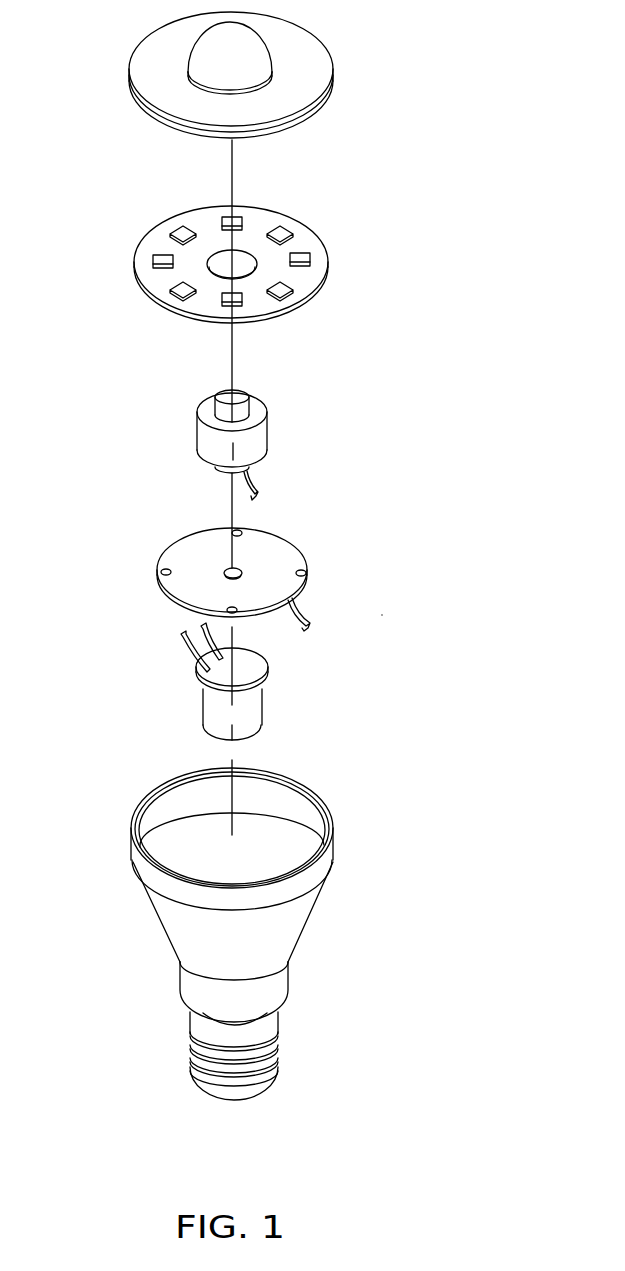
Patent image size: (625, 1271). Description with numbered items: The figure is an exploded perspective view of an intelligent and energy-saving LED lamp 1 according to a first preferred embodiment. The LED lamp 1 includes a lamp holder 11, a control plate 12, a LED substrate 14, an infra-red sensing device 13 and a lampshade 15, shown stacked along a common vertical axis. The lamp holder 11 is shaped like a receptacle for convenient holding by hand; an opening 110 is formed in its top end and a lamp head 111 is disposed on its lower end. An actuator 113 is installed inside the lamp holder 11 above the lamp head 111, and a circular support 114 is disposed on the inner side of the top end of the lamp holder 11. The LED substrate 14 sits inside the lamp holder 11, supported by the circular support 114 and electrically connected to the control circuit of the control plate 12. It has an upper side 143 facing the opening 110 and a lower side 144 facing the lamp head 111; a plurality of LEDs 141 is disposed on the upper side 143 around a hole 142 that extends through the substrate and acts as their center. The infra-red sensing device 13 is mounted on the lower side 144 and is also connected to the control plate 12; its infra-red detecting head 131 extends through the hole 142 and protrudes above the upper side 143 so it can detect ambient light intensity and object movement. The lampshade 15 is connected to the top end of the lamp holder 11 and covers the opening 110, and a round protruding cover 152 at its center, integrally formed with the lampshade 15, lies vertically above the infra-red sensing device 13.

The LED lamp 1 is at (382, 615).
The lamp holder 11 is at (280, 930).
The opening 110 is at (145, 808).
The lamp head 111 is at (252, 1078).
The actuator 113 is at (263, 703).
The circular support 114 is at (317, 815).
The control plate 12 is at (170, 550).
The infra-red sensing device 13 is at (243, 453).
The infra-red detecting head 131 is at (240, 397).
The LED substrate 14 is at (318, 295).
The LEDs 141 is at (310, 265).
The hole 142 is at (213, 263).
The upper side 143 is at (197, 222).
The lower side 144 is at (270, 323).
The lampshade 15 is at (318, 108).
The protruding cover 152 is at (243, 43).